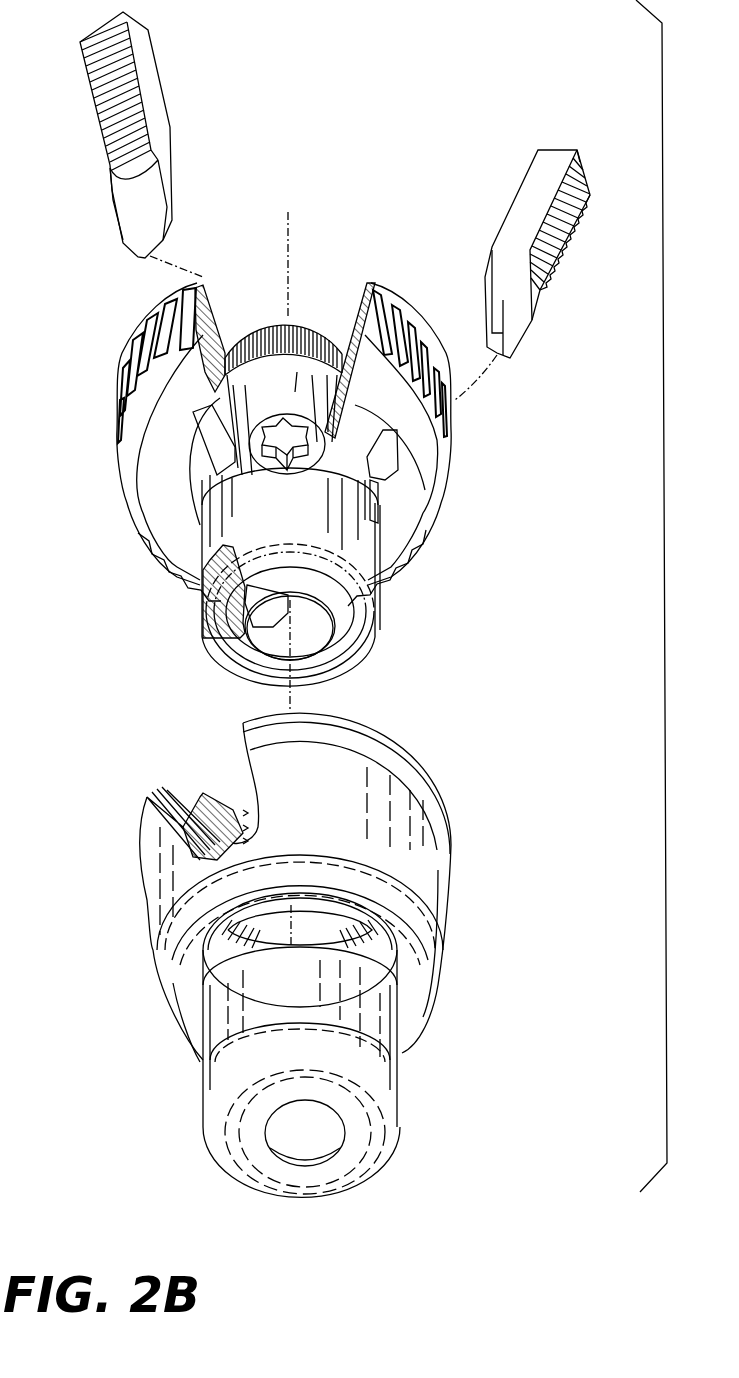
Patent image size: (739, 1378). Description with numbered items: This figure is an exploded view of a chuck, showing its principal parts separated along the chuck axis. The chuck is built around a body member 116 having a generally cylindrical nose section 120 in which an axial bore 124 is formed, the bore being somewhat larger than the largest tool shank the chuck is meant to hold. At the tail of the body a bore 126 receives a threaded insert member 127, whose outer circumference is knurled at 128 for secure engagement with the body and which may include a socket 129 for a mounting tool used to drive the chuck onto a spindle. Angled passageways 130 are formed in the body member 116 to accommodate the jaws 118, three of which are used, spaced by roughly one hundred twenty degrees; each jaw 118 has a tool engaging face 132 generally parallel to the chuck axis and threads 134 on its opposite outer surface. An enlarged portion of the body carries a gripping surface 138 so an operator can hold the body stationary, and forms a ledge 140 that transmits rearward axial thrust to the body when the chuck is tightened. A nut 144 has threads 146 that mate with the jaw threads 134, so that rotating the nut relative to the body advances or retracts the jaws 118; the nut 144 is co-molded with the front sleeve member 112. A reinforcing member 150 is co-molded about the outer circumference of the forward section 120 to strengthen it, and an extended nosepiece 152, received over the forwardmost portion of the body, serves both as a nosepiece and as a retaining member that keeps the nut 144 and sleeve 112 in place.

The front sleeve member 112 is at (322, 887).
The body member 116 is at (393, 590).
The jaws 118 is at (522, 237).
The nose section 120 is at (203, 638).
The axial bore 124 is at (335, 650).
The bore 126 is at (208, 313).
The threaded insert member 127 is at (361, 406).
The knurled portion 128 is at (303, 347).
The socket 129 is at (312, 462).
The passageways 130 is at (445, 430).
The tool engaging face 132 is at (482, 305).
The threads 134 is at (565, 232).
The gripping surface 138 is at (243, 444).
The ledge 140 is at (157, 507).
The nut 144 is at (200, 800).
The threads 146 is at (240, 847).
The reinforcing member 150 is at (300, 577).
The extended nosepiece 152 is at (405, 1085).